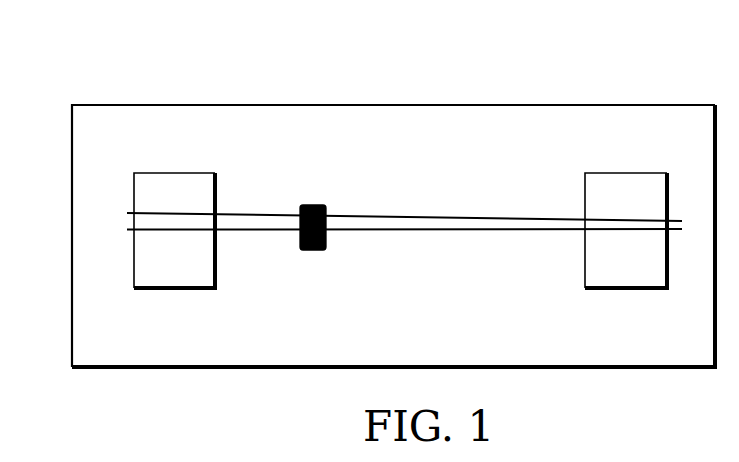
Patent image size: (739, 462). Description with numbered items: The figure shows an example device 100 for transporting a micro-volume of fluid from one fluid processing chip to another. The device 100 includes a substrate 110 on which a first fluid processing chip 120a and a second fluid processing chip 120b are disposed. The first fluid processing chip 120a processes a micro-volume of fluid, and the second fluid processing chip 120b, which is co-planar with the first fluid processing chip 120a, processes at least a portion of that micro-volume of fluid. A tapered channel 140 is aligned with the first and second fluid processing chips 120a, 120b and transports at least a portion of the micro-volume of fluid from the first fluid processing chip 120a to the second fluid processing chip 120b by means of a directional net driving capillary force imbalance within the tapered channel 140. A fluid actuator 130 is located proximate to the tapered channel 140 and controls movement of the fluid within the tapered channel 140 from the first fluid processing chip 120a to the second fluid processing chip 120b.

The device 100 is at (128, 62).
The substrate 110 is at (72, 235).
The first fluid processing chip 120a is at (177, 290).
The second fluid processing chip 120b is at (628, 290).
The fluid actuator 130 is at (313, 252).
The tapered channel 140 is at (500, 222).